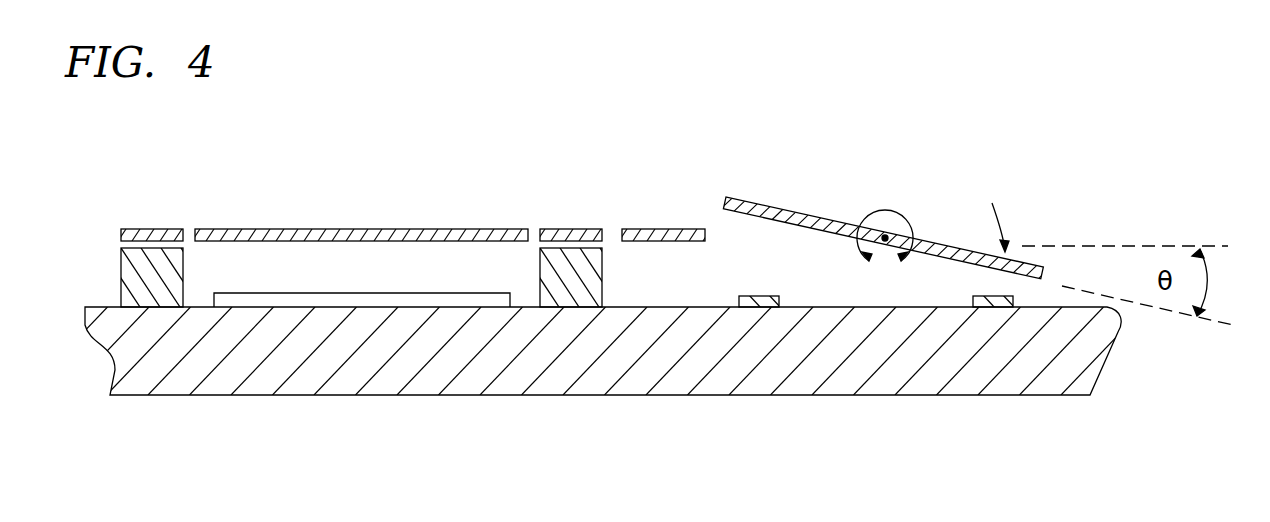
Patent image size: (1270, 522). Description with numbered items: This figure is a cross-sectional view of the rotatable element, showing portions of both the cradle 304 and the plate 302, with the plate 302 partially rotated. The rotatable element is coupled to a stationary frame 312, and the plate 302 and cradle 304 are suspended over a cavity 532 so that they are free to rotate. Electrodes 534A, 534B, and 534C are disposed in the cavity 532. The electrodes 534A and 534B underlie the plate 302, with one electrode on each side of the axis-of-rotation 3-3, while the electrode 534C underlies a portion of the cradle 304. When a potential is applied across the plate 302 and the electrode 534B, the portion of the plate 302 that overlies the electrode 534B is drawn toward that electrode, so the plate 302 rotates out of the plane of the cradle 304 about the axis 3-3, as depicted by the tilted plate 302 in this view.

The plate 302 is at (755, 197).
The cradle 304 is at (335, 227).
The stationary frame 312 is at (147, 227).
The cavity 532 is at (343, 282).
The electrode 534A is at (752, 300).
The electrode 534B is at (993, 300).
The electrode 534C is at (361, 300).
The axis-of-rotation 3-3 is at (890, 227).